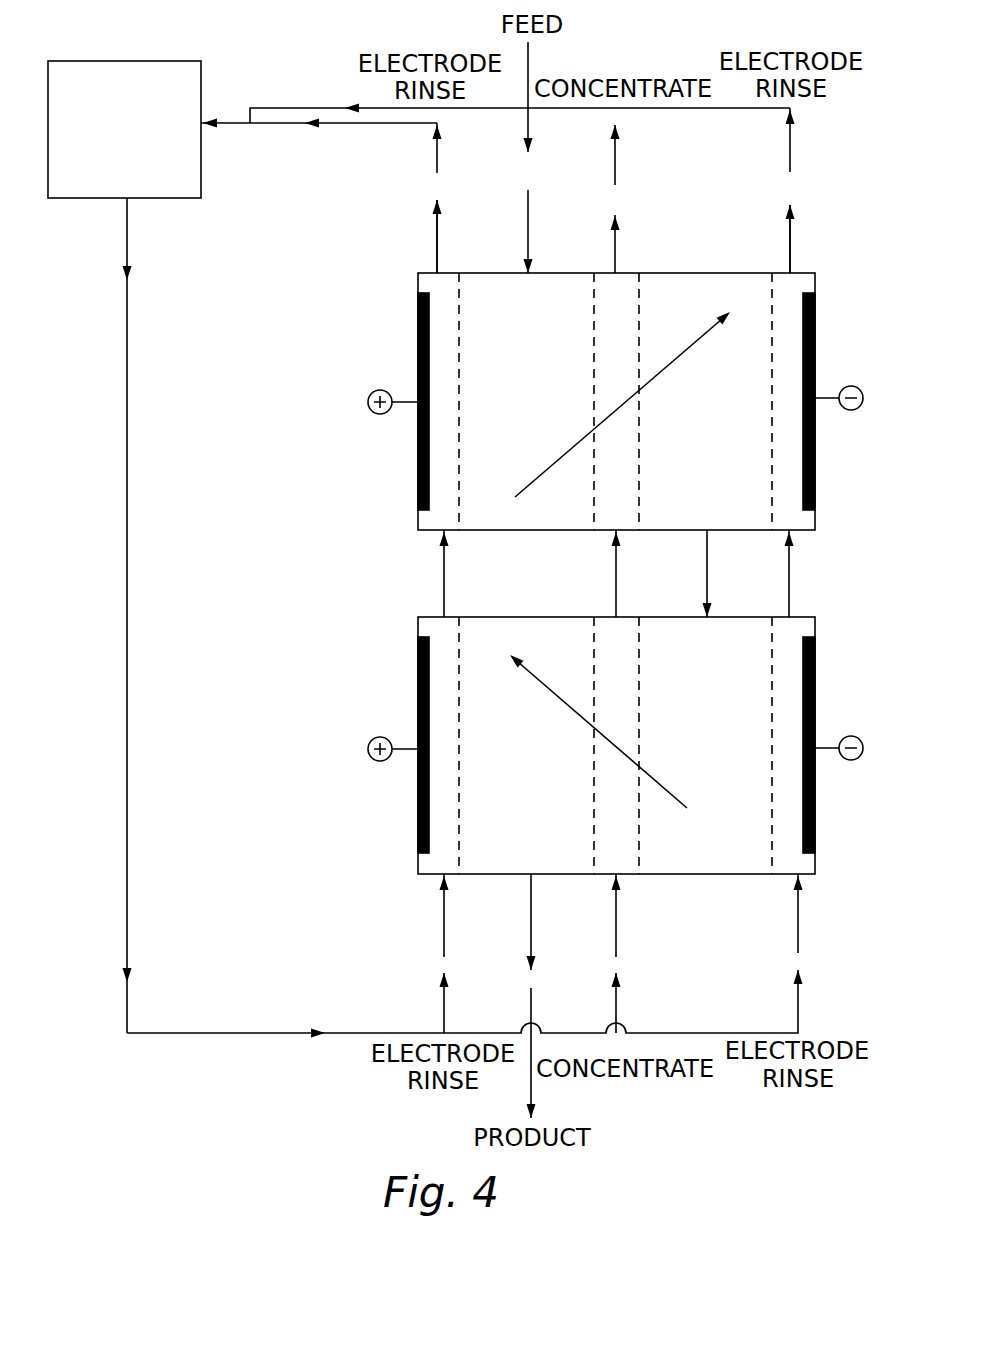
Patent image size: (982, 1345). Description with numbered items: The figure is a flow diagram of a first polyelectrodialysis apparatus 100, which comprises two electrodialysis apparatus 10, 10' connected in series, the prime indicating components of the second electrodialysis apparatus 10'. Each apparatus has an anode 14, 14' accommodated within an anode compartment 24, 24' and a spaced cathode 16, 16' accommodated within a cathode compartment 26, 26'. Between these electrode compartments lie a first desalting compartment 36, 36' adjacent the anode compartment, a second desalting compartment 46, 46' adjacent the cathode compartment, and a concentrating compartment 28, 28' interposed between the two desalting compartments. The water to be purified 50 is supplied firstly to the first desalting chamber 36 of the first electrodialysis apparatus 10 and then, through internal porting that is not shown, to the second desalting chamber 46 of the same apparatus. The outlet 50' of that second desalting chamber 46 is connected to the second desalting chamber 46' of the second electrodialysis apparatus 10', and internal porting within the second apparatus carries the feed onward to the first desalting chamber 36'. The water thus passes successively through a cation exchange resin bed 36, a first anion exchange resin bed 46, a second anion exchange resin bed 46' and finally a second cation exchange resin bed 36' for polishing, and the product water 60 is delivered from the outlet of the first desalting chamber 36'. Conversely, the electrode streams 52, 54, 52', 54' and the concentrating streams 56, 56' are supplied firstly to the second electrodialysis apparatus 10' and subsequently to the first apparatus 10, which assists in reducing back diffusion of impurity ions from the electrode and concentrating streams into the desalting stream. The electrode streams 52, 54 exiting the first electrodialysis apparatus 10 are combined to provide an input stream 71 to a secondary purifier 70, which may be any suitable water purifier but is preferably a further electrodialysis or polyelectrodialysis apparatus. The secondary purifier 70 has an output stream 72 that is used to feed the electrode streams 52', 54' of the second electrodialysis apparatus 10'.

The first electrodialysis apparatus 10 is at (611, 411).
The second electrodialysis apparatus 10' is at (618, 746).
The anode 14 is at (385, 401).
The anode 14' is at (385, 745).
The cathode 16 is at (841, 401).
The cathode 16' is at (845, 745).
The anode compartment 24 is at (385, 415).
The anode compartment 24' is at (385, 757).
The cathode compartment 26 is at (841, 401).
The cathode compartment 26' is at (849, 783).
The concentrating compartment 28 is at (647, 435).
The concentrating compartment 28' is at (653, 773).
The first desalting compartment 36 is at (501, 450).
The first desalting compartment 36' is at (504, 791).
The second desalting compartment 46 is at (705, 450).
The second desalting compartment 46' is at (710, 788).
The water to be purified 50 is at (557, 157).
The outlet 50' is at (741, 573).
The electrode stream 52 is at (397, 224).
The electrode stream 52' is at (483, 924).
The electrode stream 54 is at (822, 226).
The electrode stream 54' is at (837, 923).
The concentrating stream 56 is at (645, 199).
The concentrating stream 56' is at (654, 923).
The product water 60 is at (532, 907).
The secondary purifier 70 is at (201, 165).
The input stream 71 is at (229, 118).
The output stream 72 is at (127, 365).
The first polyelectrodialysis apparatus 100 is at (564, 577).